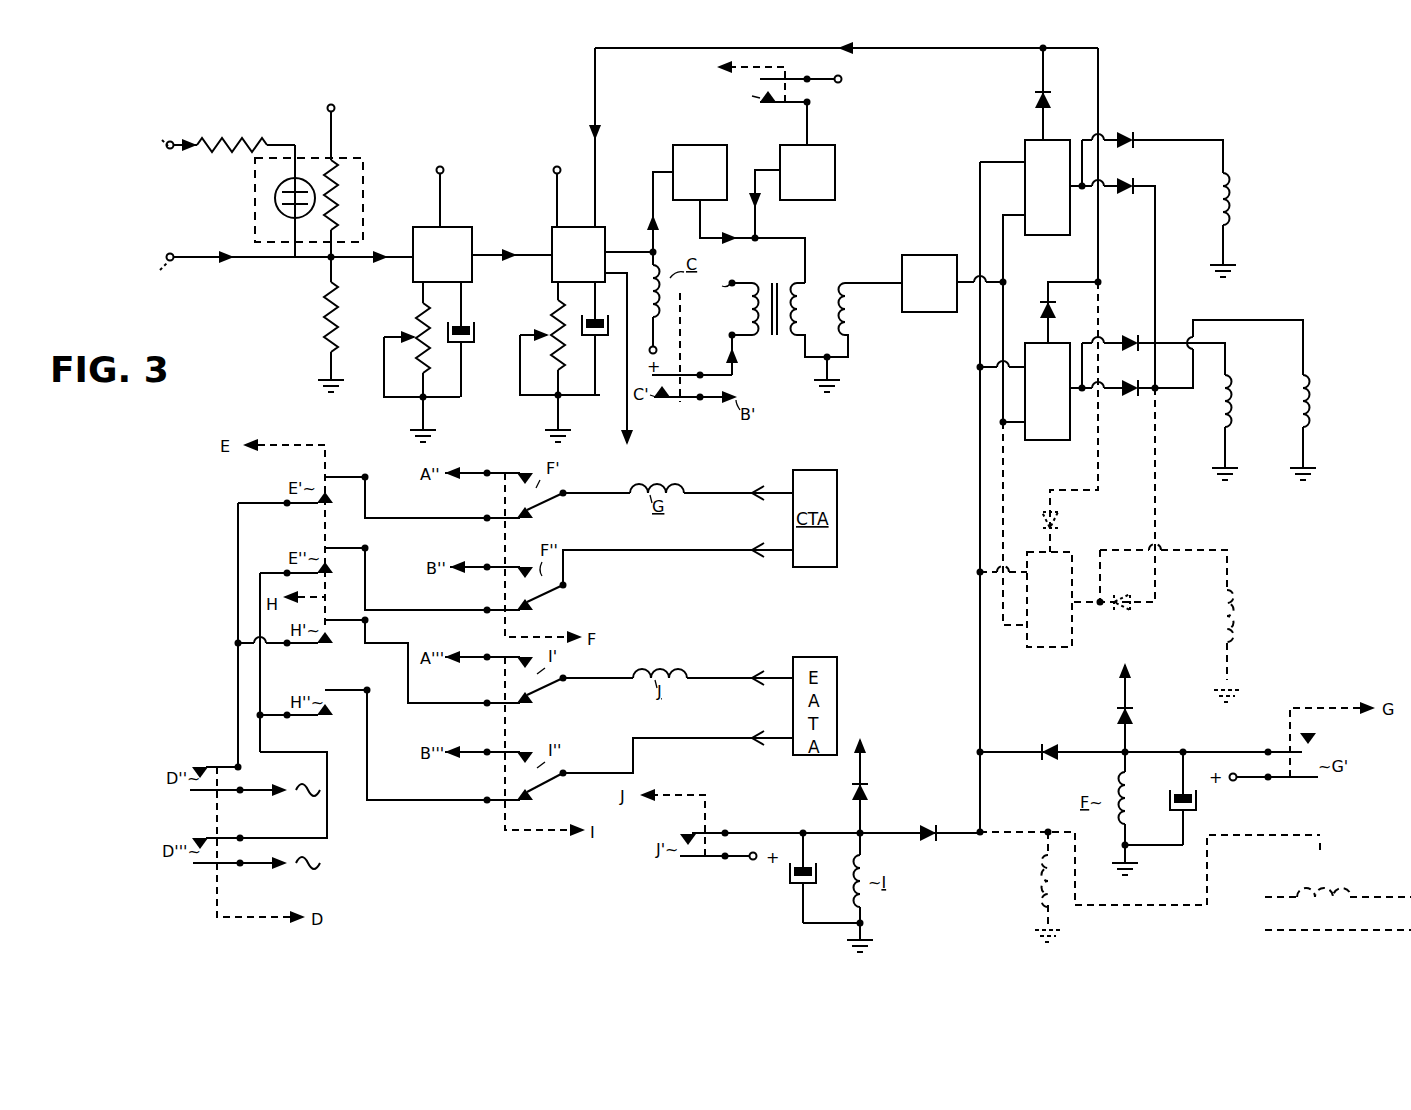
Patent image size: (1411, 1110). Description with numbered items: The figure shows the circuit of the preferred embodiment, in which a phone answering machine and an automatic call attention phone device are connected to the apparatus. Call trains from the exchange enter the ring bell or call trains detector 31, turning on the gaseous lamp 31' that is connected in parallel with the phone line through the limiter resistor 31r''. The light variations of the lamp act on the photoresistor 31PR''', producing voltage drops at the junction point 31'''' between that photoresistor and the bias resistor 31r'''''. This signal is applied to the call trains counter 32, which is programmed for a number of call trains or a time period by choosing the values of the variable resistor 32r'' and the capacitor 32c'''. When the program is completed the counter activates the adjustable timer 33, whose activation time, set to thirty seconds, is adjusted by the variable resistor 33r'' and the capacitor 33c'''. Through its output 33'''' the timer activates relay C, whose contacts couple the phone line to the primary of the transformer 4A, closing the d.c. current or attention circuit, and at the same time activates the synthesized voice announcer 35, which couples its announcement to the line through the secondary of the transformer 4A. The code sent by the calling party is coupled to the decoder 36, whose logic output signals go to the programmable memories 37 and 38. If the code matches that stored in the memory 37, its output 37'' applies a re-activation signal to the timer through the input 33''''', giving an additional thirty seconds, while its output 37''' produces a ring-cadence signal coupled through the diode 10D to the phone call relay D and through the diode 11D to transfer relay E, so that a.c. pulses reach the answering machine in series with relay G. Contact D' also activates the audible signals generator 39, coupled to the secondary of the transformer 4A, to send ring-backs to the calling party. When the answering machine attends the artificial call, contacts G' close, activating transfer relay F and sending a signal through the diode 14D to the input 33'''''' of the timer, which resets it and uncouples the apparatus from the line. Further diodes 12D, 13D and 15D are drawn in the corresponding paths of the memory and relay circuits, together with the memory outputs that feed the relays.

The ring bell or call trains detector 31 is at (337, 182).
The gaseous lamp 31' is at (232, 218).
The limiter resistor 31r'' is at (222, 129).
The photoresistor 31PR''' is at (369, 183).
The junction point 31'''' is at (283, 270).
The bias resistor 31r''''' is at (355, 337).
The call trains counter 32 is at (454, 227).
The variable resistor 32r'' is at (419, 362).
The capacitor 32c''' is at (477, 339).
The adjustable timer 33 is at (541, 226).
The variable resistor 33r'' is at (554, 362).
The capacitor 33c''' is at (591, 352).
The timer output 33'''' is at (631, 239).
The timer re-activation input 33''''' is at (616, 137).
The timer reset input 33'''''' is at (644, 364).
The synthesized voice announcer 35 is at (690, 145).
The decoder 36 is at (930, 312).
The programmable memory 37 is at (1033, 211).
The memory output 37'' is at (1056, 94).
The memory output 37''' is at (1106, 225).
The programmable memory 38 is at (1056, 440).
The audible signals generator 39 is at (832, 166).
The transformer 4A is at (770, 280).
The diode 10D is at (1116, 190).
The diode 11D is at (1116, 144).
The diode 12D is at (1118, 386).
The diode 13D is at (1138, 330).
The diode 14D is at (1149, 706).
The diode 15D is at (868, 792).